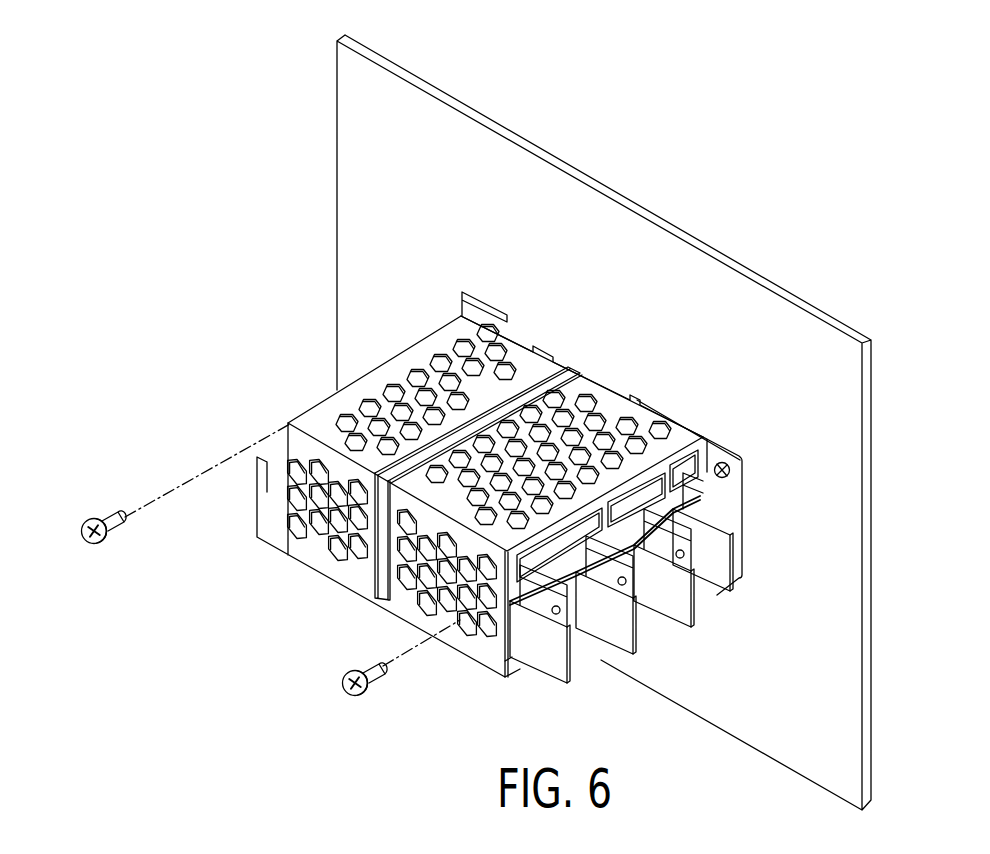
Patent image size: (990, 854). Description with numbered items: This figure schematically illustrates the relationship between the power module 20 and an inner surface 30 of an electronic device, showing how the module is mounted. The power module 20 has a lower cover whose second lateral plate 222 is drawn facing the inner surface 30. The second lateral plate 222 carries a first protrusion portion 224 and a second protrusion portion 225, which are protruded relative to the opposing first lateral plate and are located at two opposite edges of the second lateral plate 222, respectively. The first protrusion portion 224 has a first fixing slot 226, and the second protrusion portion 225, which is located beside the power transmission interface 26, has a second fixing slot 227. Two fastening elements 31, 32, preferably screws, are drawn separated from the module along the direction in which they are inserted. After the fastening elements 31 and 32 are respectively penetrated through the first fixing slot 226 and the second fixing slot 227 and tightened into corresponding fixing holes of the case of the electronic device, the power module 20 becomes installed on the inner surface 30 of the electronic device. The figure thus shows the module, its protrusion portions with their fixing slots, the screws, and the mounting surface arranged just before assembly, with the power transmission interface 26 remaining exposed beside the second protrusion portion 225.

The power module 20 is at (606, 428).
The second lateral plate 222 is at (690, 447).
The first protrusion portion 224 is at (458, 297).
The second protrusion portion 225 is at (796, 521).
The first fixing slot 226 is at (458, 312).
The second fixing slot 227 is at (728, 478).
The power transmission interface 26 is at (678, 593).
The inner surface 30 is at (822, 398).
The fastening element 31 is at (95, 543).
The fastening element 32 is at (359, 690).